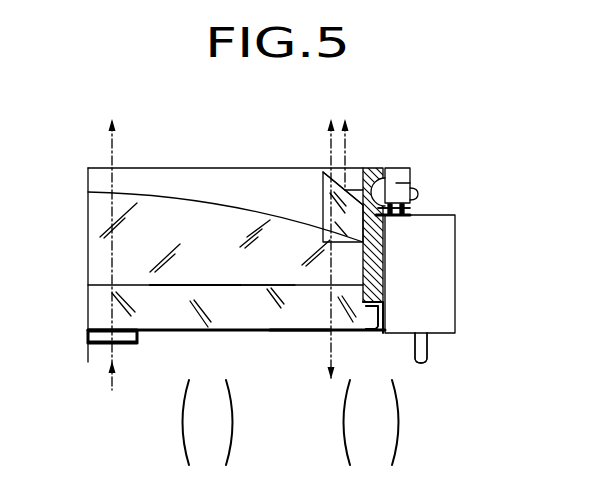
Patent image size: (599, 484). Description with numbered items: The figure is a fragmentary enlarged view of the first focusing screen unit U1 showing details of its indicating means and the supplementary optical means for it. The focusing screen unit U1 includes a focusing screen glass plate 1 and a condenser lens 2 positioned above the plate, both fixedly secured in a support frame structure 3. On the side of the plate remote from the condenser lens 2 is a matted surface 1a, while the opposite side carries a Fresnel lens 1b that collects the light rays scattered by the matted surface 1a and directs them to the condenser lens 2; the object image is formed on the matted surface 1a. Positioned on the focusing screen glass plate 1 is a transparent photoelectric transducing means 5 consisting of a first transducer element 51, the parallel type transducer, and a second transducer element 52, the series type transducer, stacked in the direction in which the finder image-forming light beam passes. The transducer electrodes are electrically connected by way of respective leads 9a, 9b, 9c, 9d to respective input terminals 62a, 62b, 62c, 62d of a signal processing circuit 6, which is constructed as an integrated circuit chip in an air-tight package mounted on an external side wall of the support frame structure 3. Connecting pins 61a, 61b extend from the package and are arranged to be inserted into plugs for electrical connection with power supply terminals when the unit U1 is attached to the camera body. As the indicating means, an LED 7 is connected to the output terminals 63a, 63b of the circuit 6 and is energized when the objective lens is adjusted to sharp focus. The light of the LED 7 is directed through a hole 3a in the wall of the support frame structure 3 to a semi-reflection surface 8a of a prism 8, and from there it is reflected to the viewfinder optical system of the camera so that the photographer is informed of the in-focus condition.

The focusing screen glass plate 1 is at (258, 330).
The matted surface 1a is at (297, 340).
The Fresnel lens 1b is at (263, 272).
The condenser lens 2 is at (168, 212).
The support frame structure 3 is at (245, 177).
The hole 3a is at (359, 177).
The transparent photoelectric transducing means 5 is at (127, 352).
The first transparent photoelectric transducer element 51 is at (101, 328).
The second transparent photoelectric transducer element 52 is at (100, 346).
The signal processing circuit 6 is at (438, 278).
The connecting pin 61a is at (428, 360).
The connecting pin 61b is at (456, 373).
The input terminal 62a is at (370, 387).
The input terminal 62b is at (370, 359).
The input terminal 62c is at (370, 373).
The input terminal 62d is at (370, 335).
The output terminal 63a is at (398, 218).
The output terminal 63b is at (450, 231).
The LED 7 is at (403, 181).
The prism 8 is at (323, 197).
The semi-reflection surface 8a is at (336, 175).
The lead 9a is at (195, 377).
The lead 9b is at (195, 347).
The lead 9c is at (195, 362).
The lead 9d is at (205, 333).
The first focusing screen unit U1 is at (397, 143).